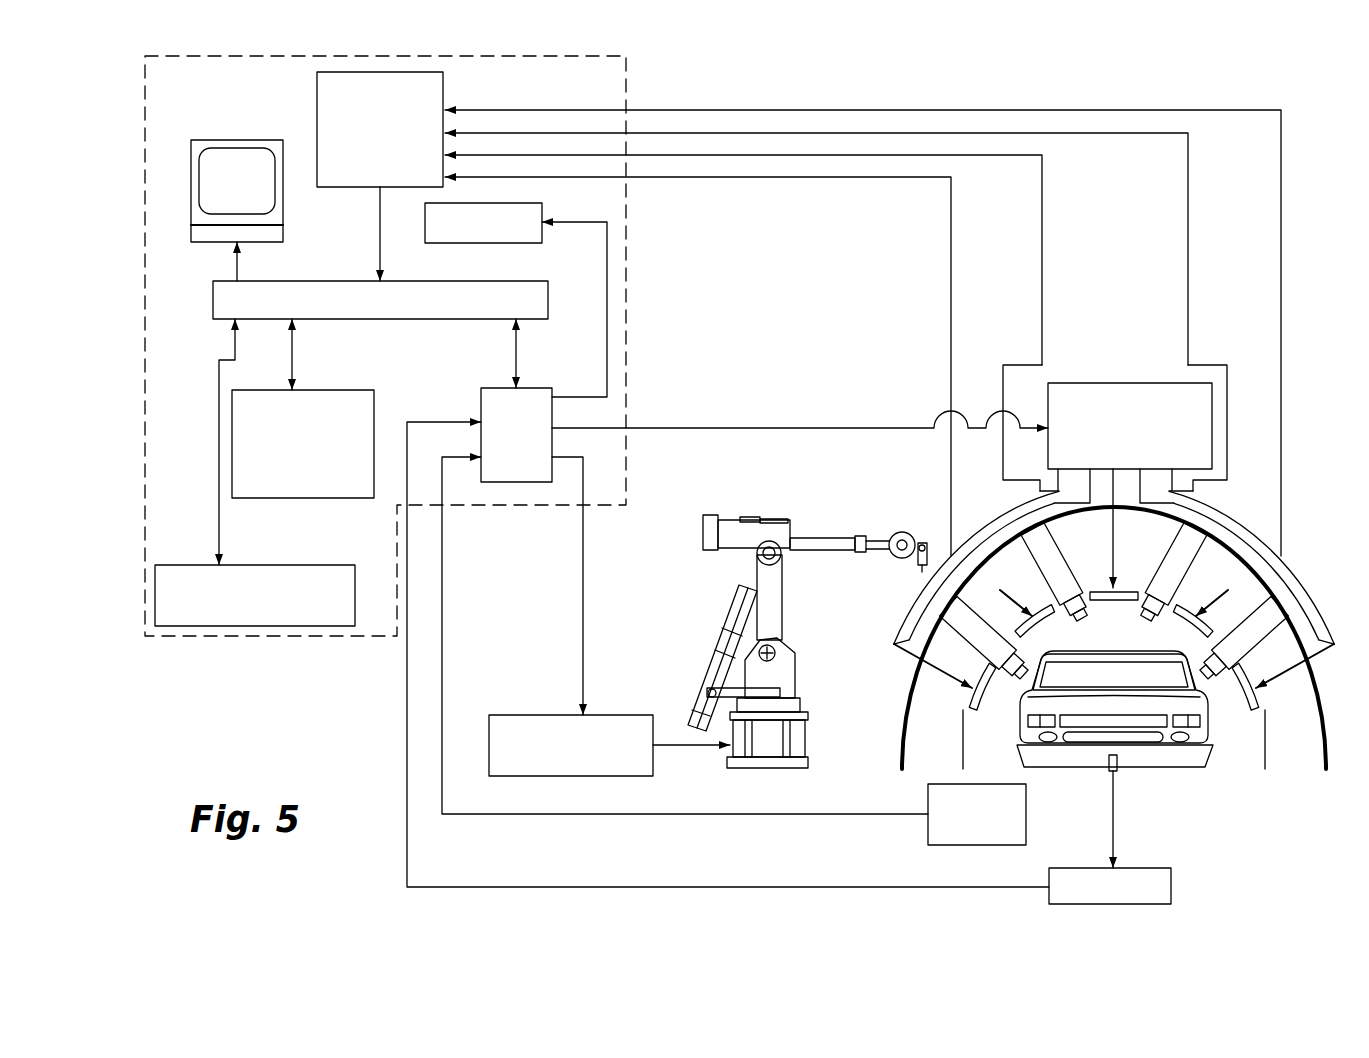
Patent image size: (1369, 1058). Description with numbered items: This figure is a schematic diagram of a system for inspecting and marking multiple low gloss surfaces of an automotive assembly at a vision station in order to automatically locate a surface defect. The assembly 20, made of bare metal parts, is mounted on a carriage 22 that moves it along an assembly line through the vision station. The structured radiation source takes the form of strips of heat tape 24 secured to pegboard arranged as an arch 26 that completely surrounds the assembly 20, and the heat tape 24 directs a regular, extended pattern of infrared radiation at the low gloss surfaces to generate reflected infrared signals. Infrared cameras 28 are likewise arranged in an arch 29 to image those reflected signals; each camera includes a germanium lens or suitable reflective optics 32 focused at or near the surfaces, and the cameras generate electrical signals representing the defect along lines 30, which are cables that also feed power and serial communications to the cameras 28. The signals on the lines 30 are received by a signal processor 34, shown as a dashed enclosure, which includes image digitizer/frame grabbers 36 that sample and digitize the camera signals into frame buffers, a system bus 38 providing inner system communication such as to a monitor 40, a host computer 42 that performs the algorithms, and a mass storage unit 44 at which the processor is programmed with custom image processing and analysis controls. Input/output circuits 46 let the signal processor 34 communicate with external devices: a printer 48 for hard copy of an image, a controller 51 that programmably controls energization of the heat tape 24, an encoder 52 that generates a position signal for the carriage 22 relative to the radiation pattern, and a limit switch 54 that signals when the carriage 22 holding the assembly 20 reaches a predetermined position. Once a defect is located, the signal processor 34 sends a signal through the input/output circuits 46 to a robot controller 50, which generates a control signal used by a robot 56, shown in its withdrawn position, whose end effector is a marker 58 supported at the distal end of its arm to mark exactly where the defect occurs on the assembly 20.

The assembly 20 is at (1213, 720).
The carriage 22 is at (1050, 770).
The heat tape 24 is at (980, 705).
The arch 26 is at (1267, 765).
The infrared cameras 28 is at (1015, 640).
The arch 29 is at (903, 768).
The lines 30 is at (951, 323).
The reflective optics 32 is at (1185, 655).
The signal processor 34 is at (632, 91).
The image digitizer/frame grabbers 36 is at (443, 97).
The system bus 38 is at (300, 281).
The monitor 40 is at (237, 140).
The host computer 42 is at (374, 400).
The mass storage unit 44 is at (280, 565).
The input/output circuits 46 is at (530, 388).
The printer 48 is at (510, 243).
The robot controller 50 is at (505, 715).
The controller 51 is at (1085, 383).
The encoder 52 is at (1172, 887).
The limit switch 54 is at (973, 846).
The robot 56 is at (690, 635).
The marker 58 is at (915, 578).